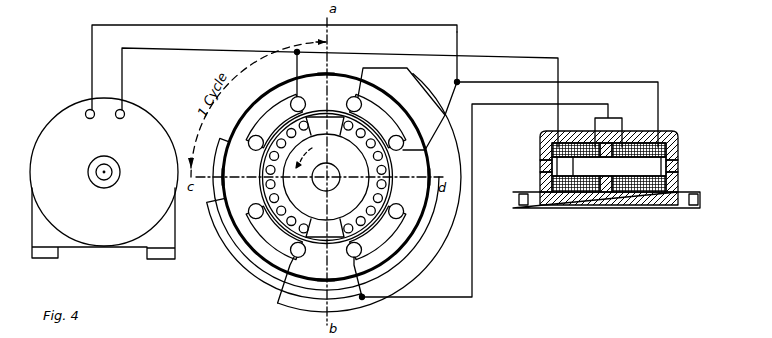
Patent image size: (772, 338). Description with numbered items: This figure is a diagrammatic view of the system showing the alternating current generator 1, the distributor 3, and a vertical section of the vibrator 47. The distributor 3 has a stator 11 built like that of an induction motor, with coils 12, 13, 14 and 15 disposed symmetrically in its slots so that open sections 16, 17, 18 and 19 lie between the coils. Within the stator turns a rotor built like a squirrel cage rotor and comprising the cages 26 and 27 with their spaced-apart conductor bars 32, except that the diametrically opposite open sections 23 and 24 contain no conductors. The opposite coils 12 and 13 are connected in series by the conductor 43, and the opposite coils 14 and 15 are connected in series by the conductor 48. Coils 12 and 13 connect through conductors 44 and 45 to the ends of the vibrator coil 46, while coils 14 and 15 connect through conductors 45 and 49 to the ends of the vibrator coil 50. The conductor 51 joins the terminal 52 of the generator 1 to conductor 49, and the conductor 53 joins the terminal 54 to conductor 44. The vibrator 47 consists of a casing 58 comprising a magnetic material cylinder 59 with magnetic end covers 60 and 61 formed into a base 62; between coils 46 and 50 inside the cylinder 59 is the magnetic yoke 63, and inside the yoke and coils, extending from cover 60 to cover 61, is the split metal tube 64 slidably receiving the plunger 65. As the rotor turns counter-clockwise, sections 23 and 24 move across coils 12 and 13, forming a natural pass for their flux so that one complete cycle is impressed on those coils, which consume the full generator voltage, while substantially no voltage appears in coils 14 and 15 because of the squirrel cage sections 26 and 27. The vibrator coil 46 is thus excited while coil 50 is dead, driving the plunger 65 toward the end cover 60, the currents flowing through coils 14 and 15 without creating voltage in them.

The alternating current generator 1 is at (104, 178).
The distributor 3 is at (400, 108).
The stator 11 is at (372, 92).
The coil 12 is at (275, 122).
The coil 13 is at (376, 250).
The coil 14 is at (275, 253).
The coil 15 is at (376, 122).
The open section 16 is at (333, 86).
The open section 17 is at (328, 268).
The open section 18 is at (236, 181).
The open section 19 is at (416, 182).
The open section 23 is at (325, 126).
The open section 24 is at (325, 228).
The cage 26 is at (286, 188).
The cage 27 is at (365, 152).
The conductor bar 32 is at (386, 170).
The conductor 43 is at (208, 203).
The conductor 44 is at (488, 53).
The conductor 45 is at (491, 202).
The coil 46 is at (562, 196).
The vibrator 47 is at (668, 134).
The conductor 48 is at (441, 264).
The conductor 49 is at (551, 107).
The coil 50 is at (640, 196).
The conductor 51 is at (437, 36).
The terminal 52 is at (90, 119).
The conductor 53 is at (218, 34).
The terminal 54 is at (120, 119).
The casing 58 is at (582, 196).
The cylinder 59 is at (628, 196).
The end cover 60 is at (540, 182).
The end cover 61 is at (678, 180).
The base 62 is at (686, 212).
The yoke 63 is at (606, 196).
The split metal tube 64 is at (678, 169).
The plunger 65 is at (609, 166).